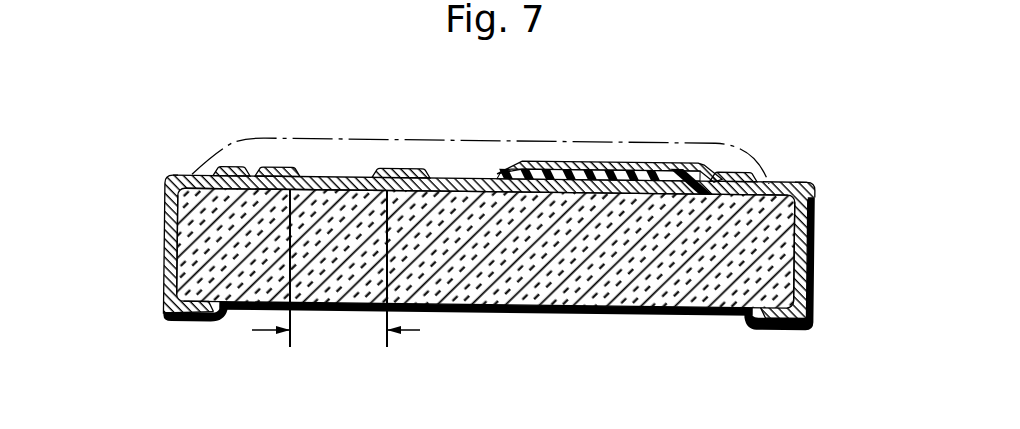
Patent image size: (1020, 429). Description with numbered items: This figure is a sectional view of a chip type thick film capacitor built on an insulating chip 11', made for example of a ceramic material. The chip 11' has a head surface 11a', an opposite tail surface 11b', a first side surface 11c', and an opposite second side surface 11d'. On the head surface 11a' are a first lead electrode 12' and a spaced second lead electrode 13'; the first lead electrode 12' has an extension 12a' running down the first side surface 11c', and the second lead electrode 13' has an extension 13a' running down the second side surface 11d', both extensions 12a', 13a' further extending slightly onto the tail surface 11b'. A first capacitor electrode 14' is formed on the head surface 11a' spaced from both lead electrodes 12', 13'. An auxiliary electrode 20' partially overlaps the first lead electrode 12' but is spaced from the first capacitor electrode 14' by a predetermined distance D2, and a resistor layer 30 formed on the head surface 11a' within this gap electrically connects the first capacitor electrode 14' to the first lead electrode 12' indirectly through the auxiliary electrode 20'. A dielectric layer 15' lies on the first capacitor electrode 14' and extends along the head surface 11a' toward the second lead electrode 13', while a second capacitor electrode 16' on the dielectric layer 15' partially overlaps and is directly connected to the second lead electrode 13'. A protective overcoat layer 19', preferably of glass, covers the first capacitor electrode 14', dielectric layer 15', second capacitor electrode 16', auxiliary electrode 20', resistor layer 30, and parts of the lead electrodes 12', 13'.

The insulating chip 11' is at (486, 298).
The head surface 11a' is at (486, 135).
The tail surface 11b' is at (497, 357).
The first side surface 11c' is at (122, 242).
The second side surface 11d' is at (854, 248).
The first lead electrode 12' is at (173, 202).
The extension of first lead electrode 12a' is at (147, 292).
The second lead electrode 13' is at (811, 211).
The extension of second lead electrode 13a' is at (828, 264).
The first capacitor electrode 14' is at (490, 135).
The dielectric layer 15' is at (604, 123).
The second capacitor electrode 16' is at (609, 117).
The protective overcoat layer 19' is at (480, 117).
The auxiliary electrode 20' is at (233, 113).
The resistor layer 30 is at (325, 179).
The predetermined distance D2 is at (355, 331).